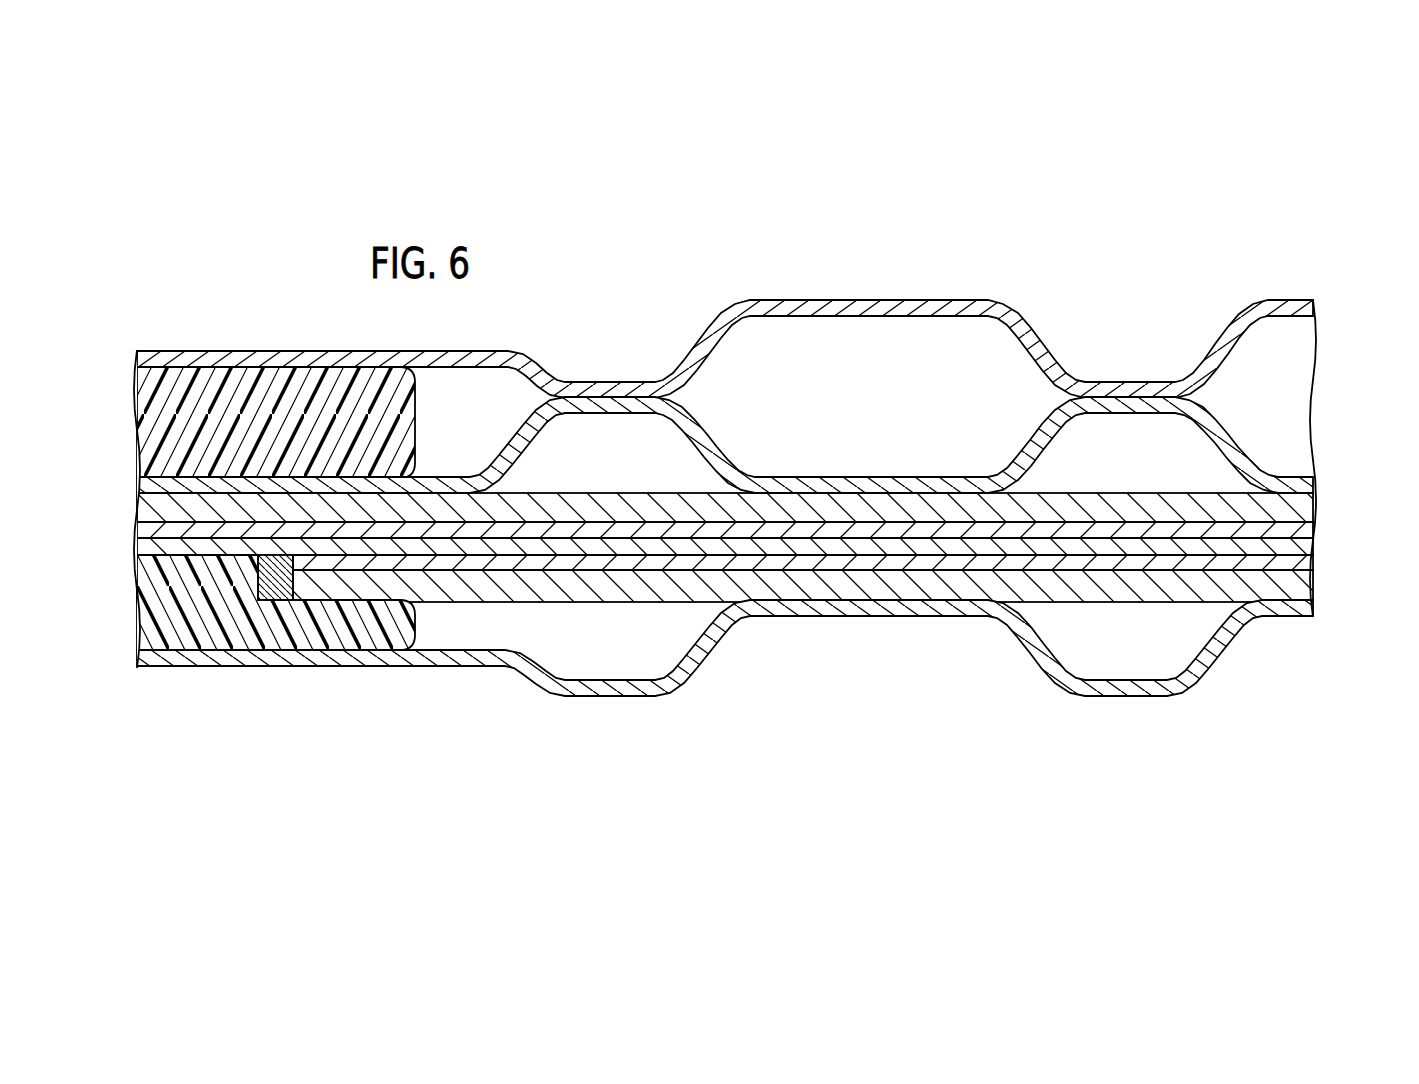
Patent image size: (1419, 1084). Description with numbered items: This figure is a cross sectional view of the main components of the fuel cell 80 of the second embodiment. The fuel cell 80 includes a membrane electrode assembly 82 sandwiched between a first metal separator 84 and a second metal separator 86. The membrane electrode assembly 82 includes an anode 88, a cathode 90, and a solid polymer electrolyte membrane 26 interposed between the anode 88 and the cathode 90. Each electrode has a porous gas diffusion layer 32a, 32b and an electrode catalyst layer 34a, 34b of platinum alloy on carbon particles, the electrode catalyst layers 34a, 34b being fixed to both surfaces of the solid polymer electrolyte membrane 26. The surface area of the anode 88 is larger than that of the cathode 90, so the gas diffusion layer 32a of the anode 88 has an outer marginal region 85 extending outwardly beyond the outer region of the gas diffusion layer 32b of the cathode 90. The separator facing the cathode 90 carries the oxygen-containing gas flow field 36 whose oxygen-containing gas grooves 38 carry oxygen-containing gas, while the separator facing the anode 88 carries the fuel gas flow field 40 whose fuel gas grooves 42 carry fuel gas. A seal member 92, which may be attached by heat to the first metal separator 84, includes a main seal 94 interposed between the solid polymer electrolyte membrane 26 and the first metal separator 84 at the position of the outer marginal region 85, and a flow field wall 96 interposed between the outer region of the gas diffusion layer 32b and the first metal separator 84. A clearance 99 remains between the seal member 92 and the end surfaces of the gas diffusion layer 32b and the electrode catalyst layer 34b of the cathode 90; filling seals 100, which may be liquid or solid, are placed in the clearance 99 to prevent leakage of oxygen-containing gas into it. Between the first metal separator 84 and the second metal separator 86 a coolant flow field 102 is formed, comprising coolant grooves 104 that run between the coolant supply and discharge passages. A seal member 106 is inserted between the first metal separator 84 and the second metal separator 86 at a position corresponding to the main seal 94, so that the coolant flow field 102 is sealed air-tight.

The fuel cell 80 is at (629, 309).
The membrane electrode assembly 82 is at (772, 494).
The first metal separator 84 is at (1060, 330).
The second metal separator 86 is at (1288, 448).
The anode 88 is at (725, 463).
The cathode 90 is at (775, 583).
The solid polymer electrolyte membrane 26 is at (1312, 546).
The gas diffusion layer 32a is at (858, 505).
The electrode catalyst layer 34a is at (913, 525).
The gas diffusion layer 32b is at (1292, 580).
The electrode catalyst layer 34b is at (1296, 562).
The oxygen-containing gas flow field 36 is at (843, 663).
The oxygen-containing gas grooves 38 is at (871, 641).
The fuel gas flow field 40 is at (845, 410).
The fuel gas grooves 42 is at (880, 461).
The coolant flow field 102 is at (875, 362).
The coolant grooves 104 is at (870, 347).
The seal member 92 is at (276, 635).
The main seal 94 is at (174, 625).
The flow field wall 96 is at (390, 630).
The clearance 99 is at (291, 603).
The filling seals 100 is at (271, 553).
The seal member 106 is at (342, 400).
The outer marginal region 85 is at (228, 505).